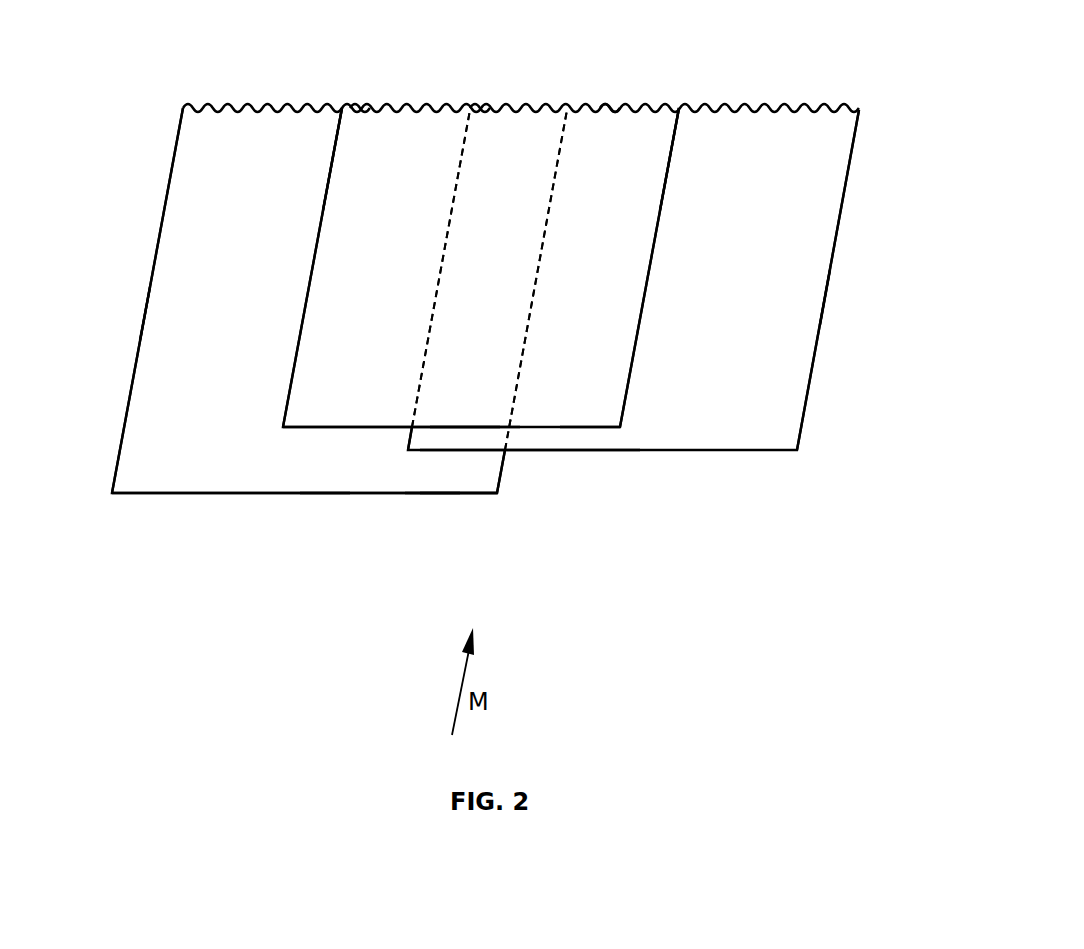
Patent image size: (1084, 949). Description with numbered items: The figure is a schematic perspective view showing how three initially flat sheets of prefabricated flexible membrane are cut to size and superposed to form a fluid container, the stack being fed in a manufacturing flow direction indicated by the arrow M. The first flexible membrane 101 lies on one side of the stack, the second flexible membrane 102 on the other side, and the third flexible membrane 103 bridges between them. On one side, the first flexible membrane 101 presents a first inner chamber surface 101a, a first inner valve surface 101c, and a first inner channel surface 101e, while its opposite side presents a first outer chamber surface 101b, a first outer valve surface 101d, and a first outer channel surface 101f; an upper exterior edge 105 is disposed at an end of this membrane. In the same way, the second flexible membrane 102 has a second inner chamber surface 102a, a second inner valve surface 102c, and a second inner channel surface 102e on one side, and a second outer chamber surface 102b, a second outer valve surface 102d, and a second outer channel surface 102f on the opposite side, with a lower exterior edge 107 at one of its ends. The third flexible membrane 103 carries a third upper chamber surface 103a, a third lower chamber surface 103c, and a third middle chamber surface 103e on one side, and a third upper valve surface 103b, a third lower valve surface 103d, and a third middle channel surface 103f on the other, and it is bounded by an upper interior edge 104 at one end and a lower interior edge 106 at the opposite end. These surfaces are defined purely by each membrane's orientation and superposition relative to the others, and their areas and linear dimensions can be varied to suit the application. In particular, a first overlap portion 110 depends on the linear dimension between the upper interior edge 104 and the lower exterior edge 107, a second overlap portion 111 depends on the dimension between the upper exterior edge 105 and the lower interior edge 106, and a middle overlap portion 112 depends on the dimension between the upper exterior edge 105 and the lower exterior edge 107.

The first flexible membrane 101 is at (758, 442).
The first inner chamber surface 101a is at (823, 188).
The first outer chamber surface 101b is at (834, 318).
The first inner valve surface 101c is at (533, 438).
The first outer valve surface 101d is at (593, 463).
The first inner channel surface 101e is at (427, 440).
The first outer channel surface 101f is at (458, 464).
The second flexible membrane 102 is at (200, 480).
The second inner chamber surface 102a is at (187, 198).
The second outer chamber surface 102b is at (140, 307).
The second inner valve surface 102c is at (303, 477).
The second outer valve surface 102d is at (325, 505).
The second inner channel surface 102e is at (447, 482).
The second outer channel surface 102f is at (430, 505).
The third flexible membrane 103 is at (603, 420).
The third upper chamber surface 103a is at (625, 312).
The third upper valve surface 103b is at (616, 438).
The third lower chamber surface 103c is at (333, 402).
The third lower valve surface 103d is at (292, 307).
The third middle chamber surface 103e is at (452, 418).
The third middle channel surface 103f is at (464, 438).
The upper interior edge 104 is at (673, 143).
The upper exterior edge 105 is at (463, 148).
The lower interior edge 106 is at (333, 150).
The lower exterior edge 107 is at (560, 143).
The first overlap portion 110 is at (610, 120).
The second overlap portion 111 is at (378, 122).
The middle overlap portion 112 is at (495, 122).